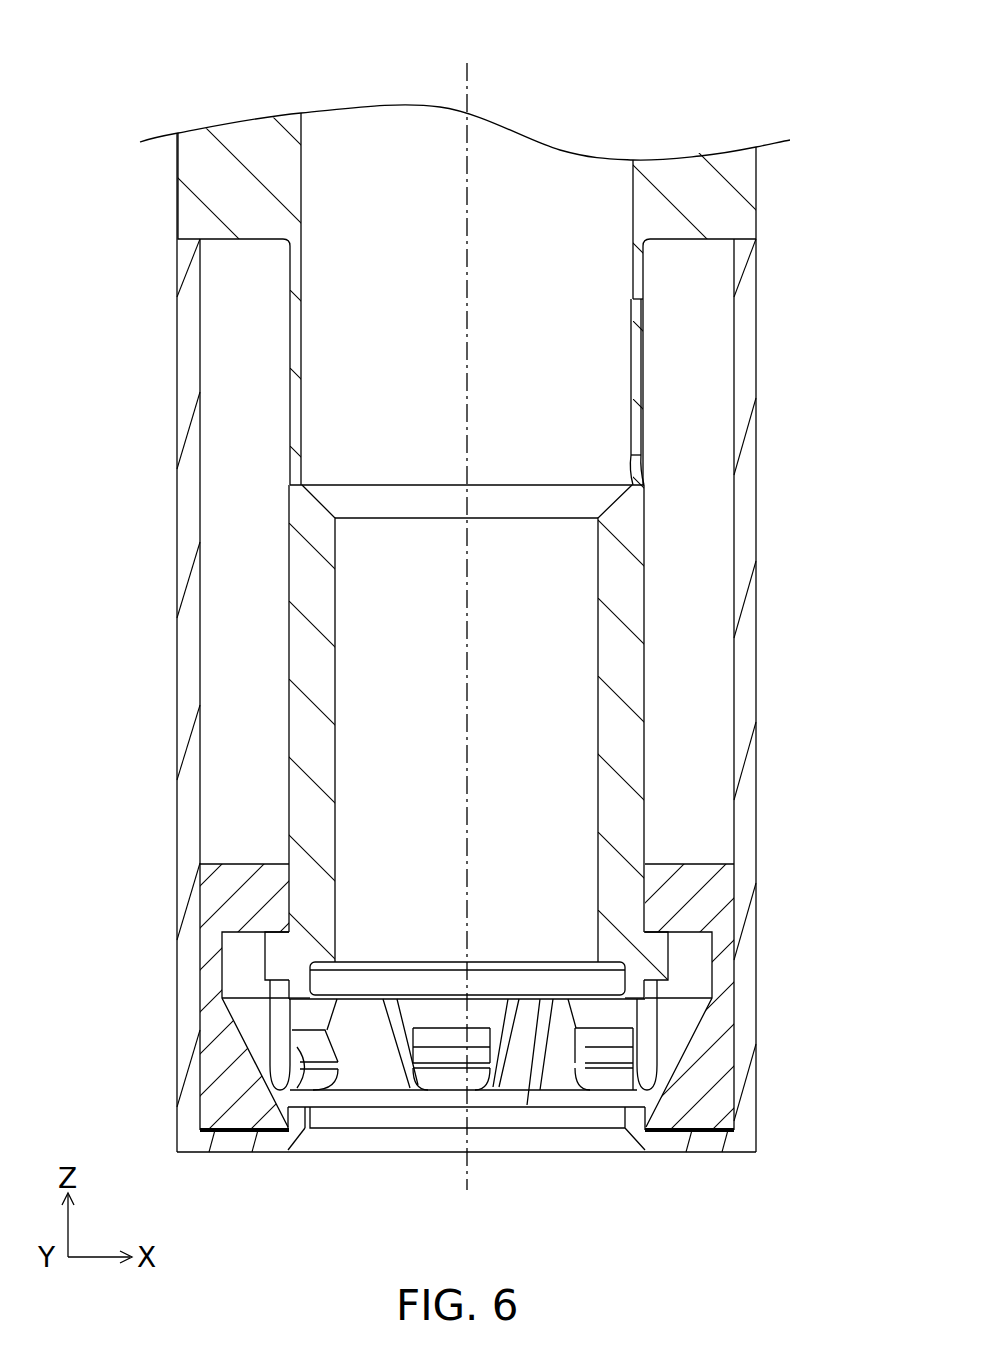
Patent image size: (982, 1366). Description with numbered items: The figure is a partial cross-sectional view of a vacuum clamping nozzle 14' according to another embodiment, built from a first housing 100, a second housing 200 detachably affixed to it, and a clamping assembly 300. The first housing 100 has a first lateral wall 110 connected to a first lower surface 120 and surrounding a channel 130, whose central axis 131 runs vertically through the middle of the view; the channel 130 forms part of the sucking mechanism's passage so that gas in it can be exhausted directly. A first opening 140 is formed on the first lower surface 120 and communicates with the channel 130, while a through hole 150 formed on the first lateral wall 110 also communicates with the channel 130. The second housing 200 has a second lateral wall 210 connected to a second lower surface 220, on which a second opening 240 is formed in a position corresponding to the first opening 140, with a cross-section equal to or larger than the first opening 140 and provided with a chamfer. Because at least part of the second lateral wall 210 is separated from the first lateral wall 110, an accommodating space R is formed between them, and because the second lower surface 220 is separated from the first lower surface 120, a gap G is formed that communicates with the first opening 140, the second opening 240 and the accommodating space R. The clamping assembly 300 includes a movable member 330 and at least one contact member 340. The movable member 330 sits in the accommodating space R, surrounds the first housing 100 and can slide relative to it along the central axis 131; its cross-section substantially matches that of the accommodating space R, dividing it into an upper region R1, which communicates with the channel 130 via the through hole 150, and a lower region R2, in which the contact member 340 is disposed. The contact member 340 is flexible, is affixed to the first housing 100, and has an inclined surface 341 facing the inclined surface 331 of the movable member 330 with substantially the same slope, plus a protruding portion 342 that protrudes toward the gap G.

The vacuum clamping nozzle 14' is at (118, 23).
The central axis 131 is at (469, 75).
The first housing 100 is at (287, 716).
The first lateral wall 110 is at (625, 603).
The first lower surface 120 is at (290, 1002).
The channel 130 is at (530, 702).
The first opening 140 is at (612, 980).
The through hole 150 is at (637, 380).
The second housing 200 is at (175, 585).
The second lateral wall 210 is at (747, 468).
The second lower surface 220 is at (303, 1108).
The second opening 240 is at (621, 1140).
The clamping assembly 300 is at (724, 1137).
The movable member 330 is at (715, 1098).
The inclined surface 331 is at (668, 1092).
The contact member 340 is at (278, 1050).
The inclined surface 341 is at (277, 1093).
The protruding portion 342 is at (598, 1080).
The accommodating space R is at (714, 550).
The upper region R1 is at (712, 808).
The lower region R2 is at (690, 948).
The gap G is at (380, 1080).